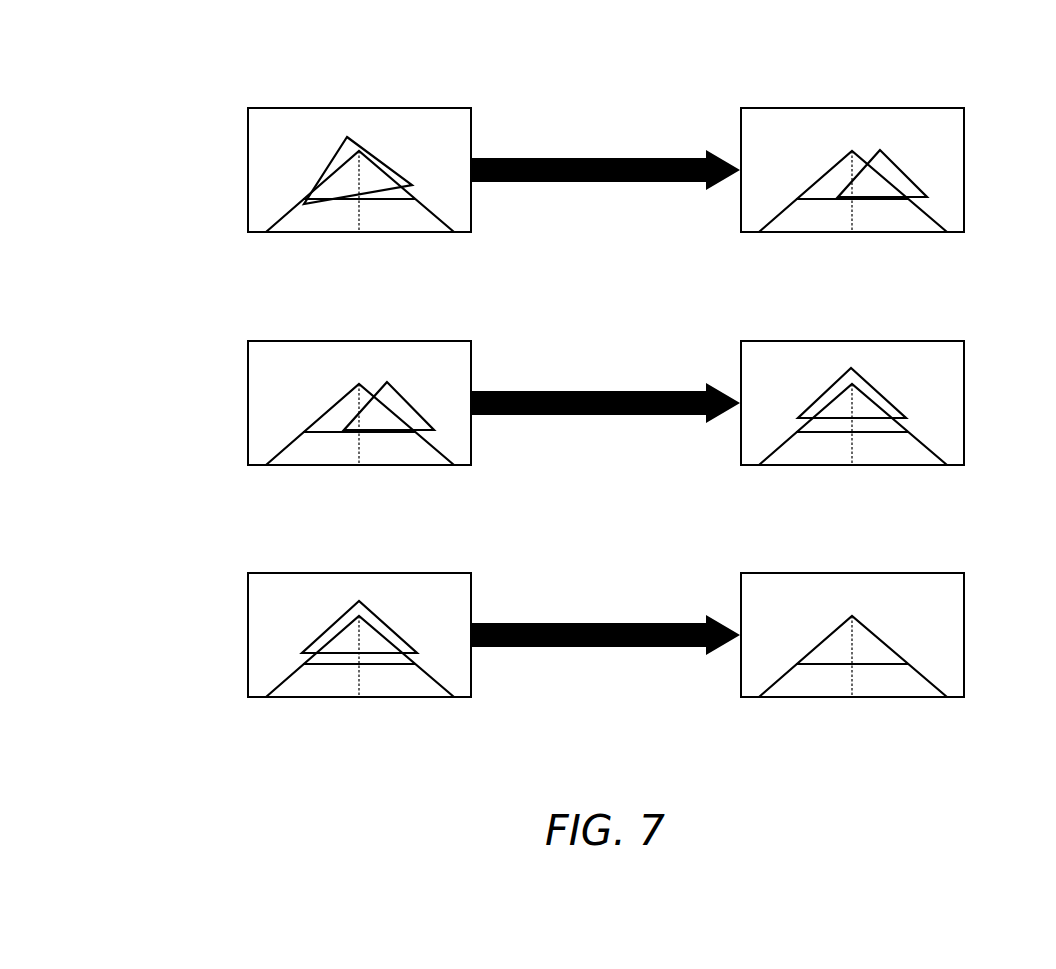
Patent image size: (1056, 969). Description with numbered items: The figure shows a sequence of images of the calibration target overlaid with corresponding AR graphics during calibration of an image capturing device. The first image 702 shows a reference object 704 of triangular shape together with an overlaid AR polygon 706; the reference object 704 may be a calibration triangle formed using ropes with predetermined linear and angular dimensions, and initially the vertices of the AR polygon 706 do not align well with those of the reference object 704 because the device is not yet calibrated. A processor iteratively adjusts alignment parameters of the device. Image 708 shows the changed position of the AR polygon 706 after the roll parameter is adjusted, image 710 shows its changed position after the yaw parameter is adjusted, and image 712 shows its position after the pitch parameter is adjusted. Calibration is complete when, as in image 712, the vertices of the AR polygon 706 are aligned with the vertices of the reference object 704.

The image 702 is at (326, 107).
The reference object 704 is at (404, 190).
The AR polygon 706 is at (357, 135).
The image 708 is at (964, 168).
The image 710 is at (964, 398).
The image 712 is at (964, 631).